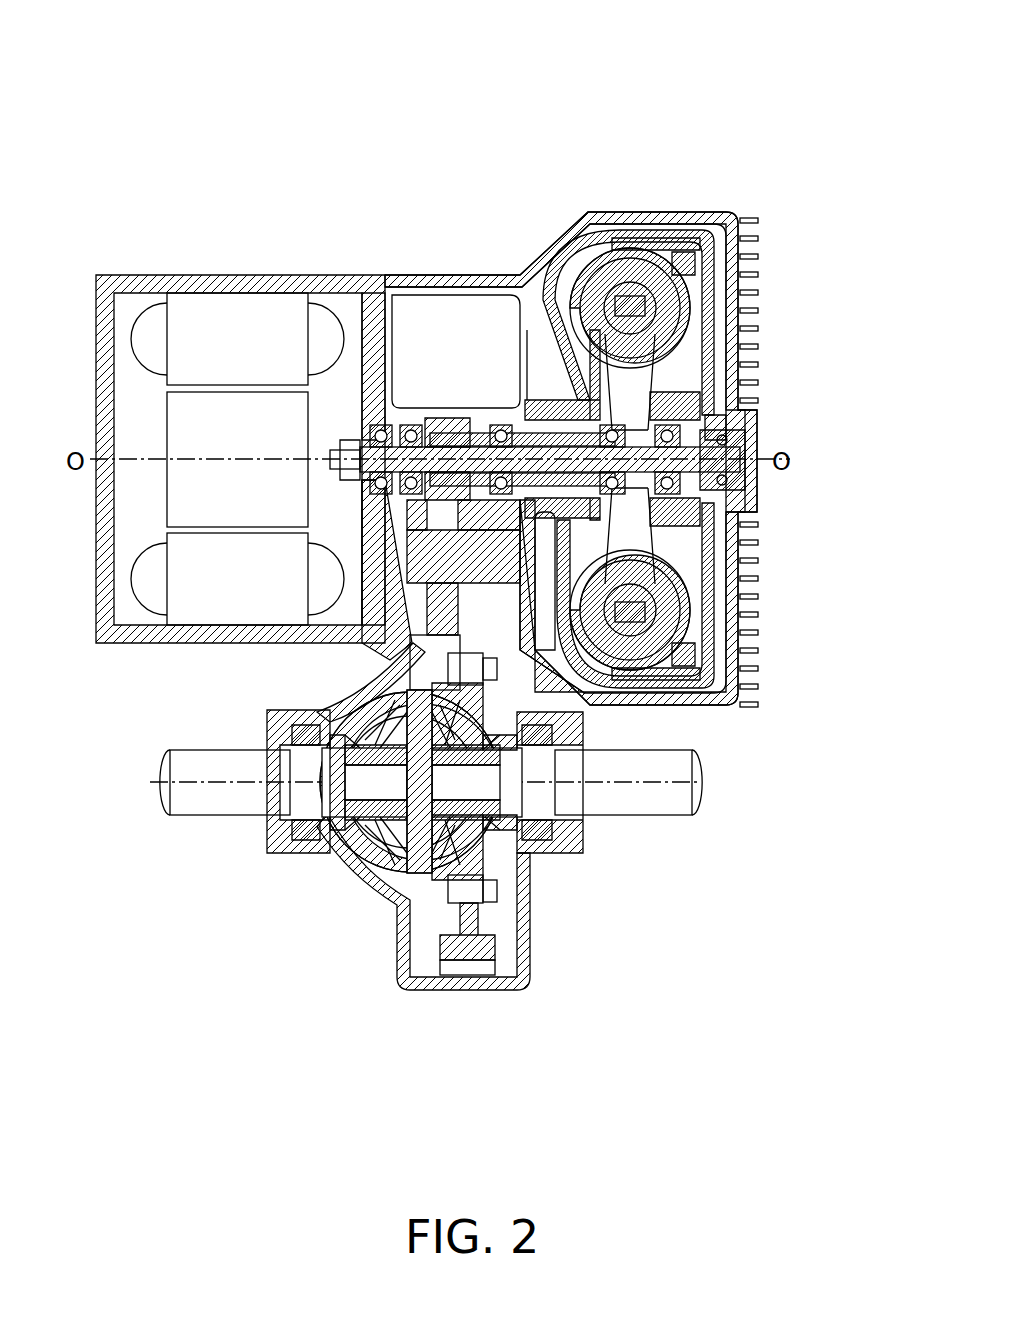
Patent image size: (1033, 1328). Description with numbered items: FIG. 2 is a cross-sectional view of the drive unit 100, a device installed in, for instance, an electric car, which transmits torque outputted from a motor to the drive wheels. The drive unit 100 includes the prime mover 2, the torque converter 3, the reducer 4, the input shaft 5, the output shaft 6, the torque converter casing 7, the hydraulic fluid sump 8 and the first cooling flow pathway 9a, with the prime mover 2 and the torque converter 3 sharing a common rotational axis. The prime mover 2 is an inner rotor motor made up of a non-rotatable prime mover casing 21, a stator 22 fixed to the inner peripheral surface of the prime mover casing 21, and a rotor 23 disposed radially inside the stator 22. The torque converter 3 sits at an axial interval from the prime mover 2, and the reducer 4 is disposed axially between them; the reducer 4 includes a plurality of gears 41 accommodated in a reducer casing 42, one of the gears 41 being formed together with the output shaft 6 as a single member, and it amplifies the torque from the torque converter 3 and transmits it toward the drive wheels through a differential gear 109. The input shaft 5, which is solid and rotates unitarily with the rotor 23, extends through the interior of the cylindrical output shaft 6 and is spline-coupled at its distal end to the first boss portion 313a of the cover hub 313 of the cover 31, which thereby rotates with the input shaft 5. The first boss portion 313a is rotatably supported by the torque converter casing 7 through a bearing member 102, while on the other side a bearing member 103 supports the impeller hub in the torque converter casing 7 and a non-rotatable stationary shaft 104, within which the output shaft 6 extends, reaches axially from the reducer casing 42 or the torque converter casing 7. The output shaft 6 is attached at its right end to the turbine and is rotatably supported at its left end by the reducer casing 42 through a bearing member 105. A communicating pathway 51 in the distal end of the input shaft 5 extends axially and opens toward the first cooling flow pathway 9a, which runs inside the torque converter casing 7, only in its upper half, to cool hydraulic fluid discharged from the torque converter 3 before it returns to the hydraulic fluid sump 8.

The drive unit 100 is at (682, 106).
The prime mover 2 is at (233, 265).
The prime mover casing 21 is at (257, 300).
The stator 22 is at (192, 305).
The rotor 23 is at (175, 437).
The bearing member 105 is at (335, 280).
The gears 41 is at (368, 300).
The output shaft 6 is at (412, 425).
The input shaft 5 is at (445, 430).
The stationary shaft 104 is at (445, 300).
The hydraulic fluid sump 8 is at (505, 305).
The bearing member 103 is at (520, 290).
The torque converter 3 is at (650, 238).
The first cooling flow pathway 9a is at (688, 236).
The torque converter casing 7 is at (740, 208).
The cover 31 is at (710, 300).
The cover hub 313 is at (680, 380).
The first boss portion 313a is at (700, 420).
The bearing member 102 is at (700, 430).
The communicating pathway 51 is at (735, 462).
The reducer 4 is at (410, 620).
The reducer casing 42 is at (410, 612).
The differential gear 109 is at (372, 850).